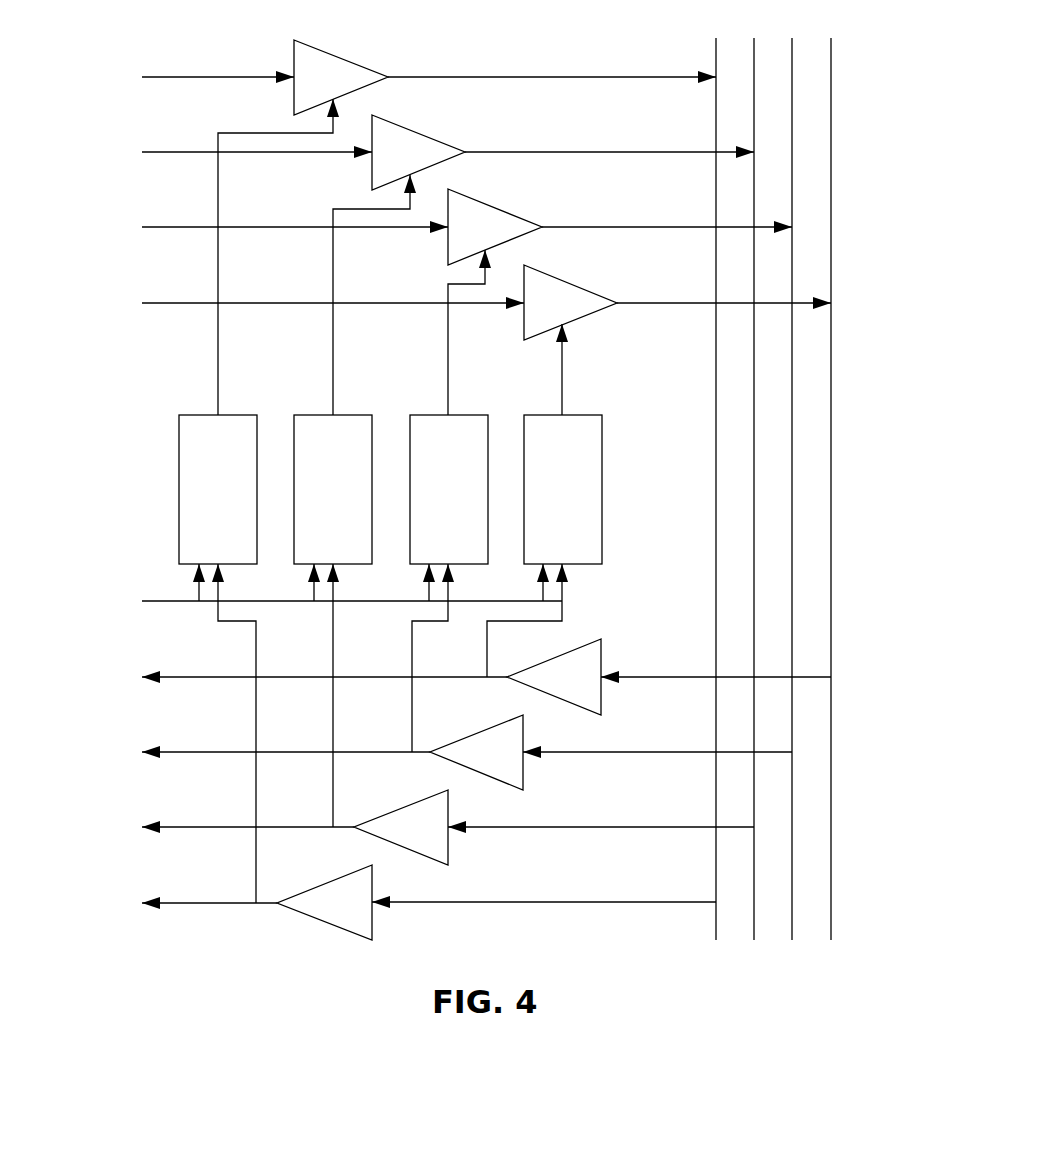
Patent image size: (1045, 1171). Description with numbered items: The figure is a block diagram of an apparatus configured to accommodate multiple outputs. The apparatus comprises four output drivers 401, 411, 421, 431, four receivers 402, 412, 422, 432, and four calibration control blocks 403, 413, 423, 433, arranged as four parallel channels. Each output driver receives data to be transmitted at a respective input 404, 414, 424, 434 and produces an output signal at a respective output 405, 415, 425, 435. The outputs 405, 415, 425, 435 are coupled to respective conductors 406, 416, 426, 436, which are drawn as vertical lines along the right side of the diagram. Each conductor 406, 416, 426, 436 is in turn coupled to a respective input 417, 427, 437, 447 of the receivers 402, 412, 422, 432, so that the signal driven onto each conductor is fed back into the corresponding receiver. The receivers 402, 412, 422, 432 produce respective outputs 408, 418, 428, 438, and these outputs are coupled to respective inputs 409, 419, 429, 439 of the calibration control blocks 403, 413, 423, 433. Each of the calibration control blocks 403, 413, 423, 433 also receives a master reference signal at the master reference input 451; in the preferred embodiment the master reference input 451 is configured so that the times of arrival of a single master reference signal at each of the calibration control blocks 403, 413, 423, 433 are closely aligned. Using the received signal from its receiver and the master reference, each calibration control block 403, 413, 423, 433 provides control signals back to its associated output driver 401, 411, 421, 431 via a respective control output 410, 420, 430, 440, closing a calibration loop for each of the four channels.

The output driver 401 is at (345, 58).
The output driver 411 is at (436, 140).
The output driver 421 is at (503, 211).
The output driver 431 is at (591, 292).
The receiver 402 is at (297, 911).
The receiver 412 is at (398, 845).
The receiver 422 is at (477, 771).
The receiver 432 is at (553, 696).
The calibration control block 403 is at (245, 415).
The calibration control block 413 is at (357, 415).
The calibration control block 423 is at (472, 415).
The calibration control block 433 is at (586, 415).
The input 404 is at (190, 77).
The input 414 is at (188, 152).
The input 424 is at (168, 227).
The input 434 is at (168, 303).
The output 405 is at (552, 77).
The output 415 is at (560, 152).
The output 425 is at (608, 227).
The output 435 is at (662, 303).
The conductor 406 is at (716, 348).
The conductor 416 is at (754, 413).
The conductor 426 is at (792, 472).
The conductor 436 is at (831, 522).
The control output 410 is at (218, 348).
The control output 420 is at (333, 348).
The control output 430 is at (448, 348).
The control output 440 is at (562, 354).
The input 409 is at (256, 640).
The input 419 is at (333, 640).
The input 429 is at (412, 640).
The input 439 is at (487, 640).
The output 408 is at (185, 905).
The output 418 is at (185, 830).
The output 428 is at (186, 754).
The output 438 is at (199, 680).
The input 417 is at (628, 901).
The input 427 is at (632, 826).
The input 437 is at (650, 751).
The input 447 is at (660, 676).
The master reference input 451 is at (178, 601).